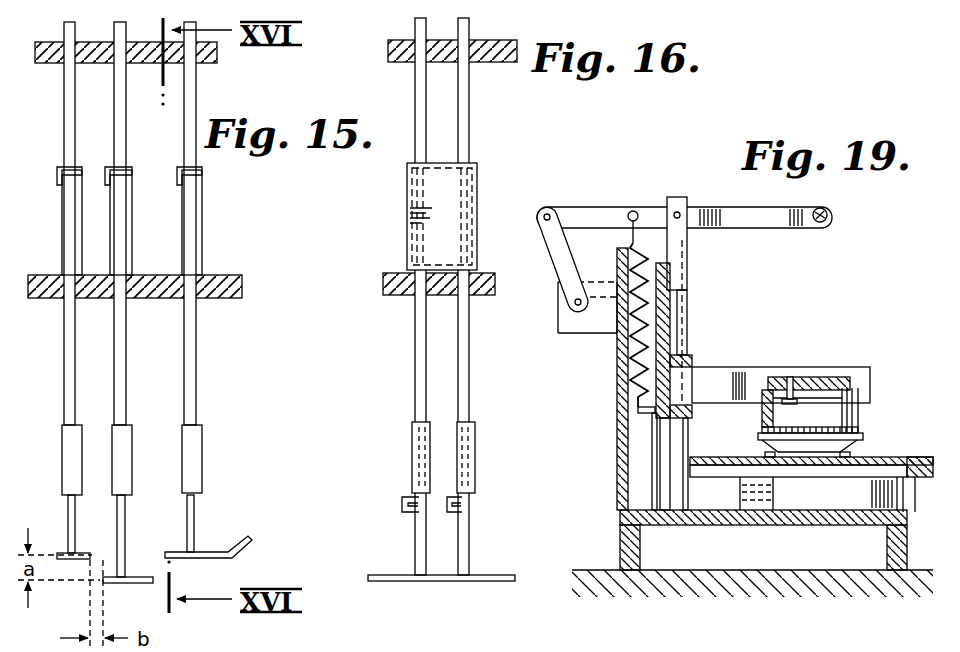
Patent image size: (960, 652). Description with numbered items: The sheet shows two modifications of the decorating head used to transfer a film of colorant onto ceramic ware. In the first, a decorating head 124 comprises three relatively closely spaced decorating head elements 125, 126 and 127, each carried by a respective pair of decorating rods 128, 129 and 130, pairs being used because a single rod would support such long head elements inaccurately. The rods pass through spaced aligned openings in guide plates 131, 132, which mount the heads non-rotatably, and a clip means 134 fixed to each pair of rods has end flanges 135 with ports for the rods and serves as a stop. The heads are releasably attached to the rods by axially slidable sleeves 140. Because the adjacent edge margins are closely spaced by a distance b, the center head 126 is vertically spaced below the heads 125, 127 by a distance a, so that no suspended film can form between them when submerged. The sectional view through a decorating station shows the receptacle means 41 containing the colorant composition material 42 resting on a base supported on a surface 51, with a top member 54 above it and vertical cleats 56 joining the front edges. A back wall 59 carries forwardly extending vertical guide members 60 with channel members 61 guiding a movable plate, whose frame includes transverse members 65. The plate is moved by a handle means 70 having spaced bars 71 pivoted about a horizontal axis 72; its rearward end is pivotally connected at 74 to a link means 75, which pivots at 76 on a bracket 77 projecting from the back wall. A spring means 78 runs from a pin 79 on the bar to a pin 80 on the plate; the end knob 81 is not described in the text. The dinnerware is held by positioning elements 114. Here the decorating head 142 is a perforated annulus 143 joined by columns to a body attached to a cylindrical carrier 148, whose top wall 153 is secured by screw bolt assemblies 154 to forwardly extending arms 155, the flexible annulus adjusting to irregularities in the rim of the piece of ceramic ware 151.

In FIG. 15, the decorating head 124 is at (218, 486).
In FIG. 16, the decorating head 124 is at (396, 547).
In FIG. 15, the decorating head element 125 is at (212, 552).
In FIG. 15, the decorating head element 126 is at (138, 577).
In FIG. 16, the decorating head element 126 is at (452, 581).
In FIG. 15, the decorating head element 127 is at (60, 553).
In FIG. 15, the decorating rods 128 is at (198, 335).
In FIG. 15, the decorating rods 129 is at (150, 345).
In FIG. 16, the decorating rods 129 is at (460, 375).
In FIG. 15, the decorating rods 130 is at (68, 375).
In FIG. 15, the guide plate 131 is at (230, 273).
In FIG. 16, the guide plate 131 is at (395, 295).
In FIG. 15, the guide plate 132 is at (206, 62).
In FIG. 16, the guide plate 132 is at (392, 40).
In FIG. 15, the clip means 134 is at (133, 210).
In FIG. 16, the clip means 134 is at (478, 180).
In FIG. 15, the end flanges 135 is at (106, 168).
In FIG. 15, the axially slidable sleeves 140 is at (75, 434).
In FIG. 16, the axially slidable sleeves 140 is at (420, 443).
In FIG. 19, the receptacle means 41 is at (848, 495).
In FIG. 19, the colorant composition material 42 is at (760, 495).
In FIG. 19, the surface 51 is at (853, 572).
In FIG. 19, the top member 54 is at (720, 350).
In FIG. 19, the vertical cleats 56 is at (912, 508).
In FIG. 19, the back wall 59 is at (620, 478).
In FIG. 19, the vertical guide members 60 is at (640, 500).
In FIG. 19, the channel members 61 is at (678, 500).
In FIG. 19, the transverse members 65 is at (693, 357).
In FIG. 19, the handle means 70 is at (709, 201).
In FIG. 19, the bars 71 is at (772, 229).
In FIG. 19, the horizontal axis 72 is at (676, 197).
In FIG. 19, the pivotal connection 74 is at (548, 207).
In FIG. 19, the link means 75 is at (568, 333).
In FIG. 19, the pivotal connection 76 is at (579, 300).
In FIG. 19, the bracket 77 is at (600, 334).
In FIG. 19, the spring means 78 is at (636, 380).
In FIG. 19, the pin 79 is at (633, 216).
In FIG. 19, the pin 80 is at (648, 413).
In FIG. 19, the knob 81 is at (832, 215).
In FIG. 19, the positioning elements 114 is at (862, 436).
In FIG. 19, the decorating head 142 is at (867, 416).
In FIG. 19, the annulus 143 is at (762, 442).
In FIG. 19, the cylindrical carrier 148 is at (754, 640).
In FIG. 19, the piece of ceramic ware 151 is at (862, 432).
In FIG. 19, the top wall 153 is at (795, 402).
In FIG. 19, the screw bolt assemblies 154 is at (785, 378).
In FIG. 19, the forwardly extending arms 155 is at (855, 385).